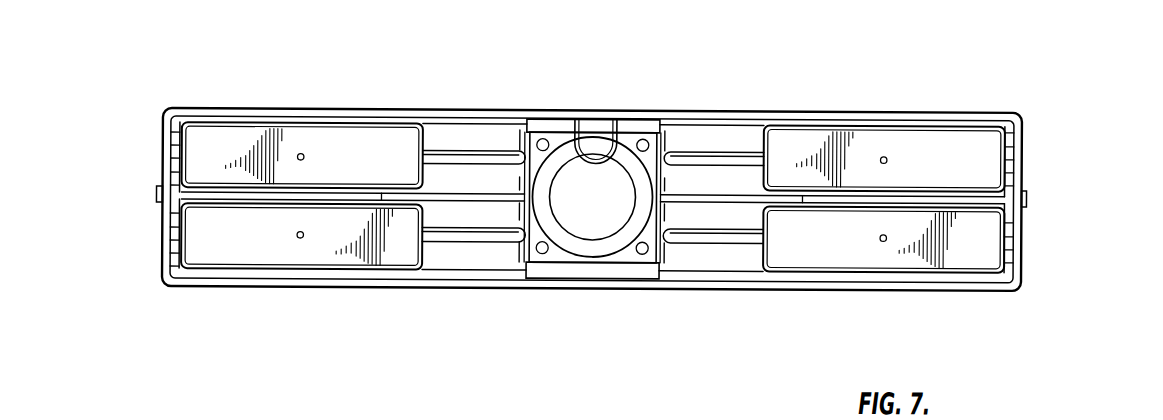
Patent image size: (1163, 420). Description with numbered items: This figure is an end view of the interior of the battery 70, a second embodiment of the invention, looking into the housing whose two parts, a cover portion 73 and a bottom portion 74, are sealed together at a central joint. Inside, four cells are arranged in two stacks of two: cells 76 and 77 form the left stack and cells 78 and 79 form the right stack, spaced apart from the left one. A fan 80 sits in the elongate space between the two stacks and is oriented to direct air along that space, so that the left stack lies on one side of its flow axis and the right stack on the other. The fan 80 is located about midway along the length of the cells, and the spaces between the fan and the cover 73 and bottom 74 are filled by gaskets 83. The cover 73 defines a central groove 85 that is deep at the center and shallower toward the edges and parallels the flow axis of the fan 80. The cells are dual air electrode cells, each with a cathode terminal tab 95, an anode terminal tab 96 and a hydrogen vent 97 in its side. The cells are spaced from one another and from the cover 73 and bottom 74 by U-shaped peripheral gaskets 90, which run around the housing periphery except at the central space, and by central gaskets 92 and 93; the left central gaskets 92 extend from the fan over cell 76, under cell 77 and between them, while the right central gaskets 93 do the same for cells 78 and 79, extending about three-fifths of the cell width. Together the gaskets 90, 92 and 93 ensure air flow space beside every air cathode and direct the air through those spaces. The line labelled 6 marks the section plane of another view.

The section line 6- 6 is at (70, 192).
The battery 70 is at (846, 54).
The cover portion 73 is at (335, 112).
The bottom portion 74 is at (163, 232).
The cell 76 is at (217, 142).
The cell 77 is at (215, 253).
The cell 78 is at (1013, 138).
The cell 79 is at (990, 243).
The fan 80 is at (578, 208).
The gaskets 83 is at (560, 117).
The central groove 85 is at (633, 115).
The U-shaped peripheral gaskets 90 is at (300, 119).
The left central gaskets 92 is at (390, 117).
The right central gaskets 93 is at (724, 116).
The cathode terminal tab 95 is at (447, 148).
The anode terminal tab 96 is at (703, 146).
The hydrogen vent 97 is at (879, 149).